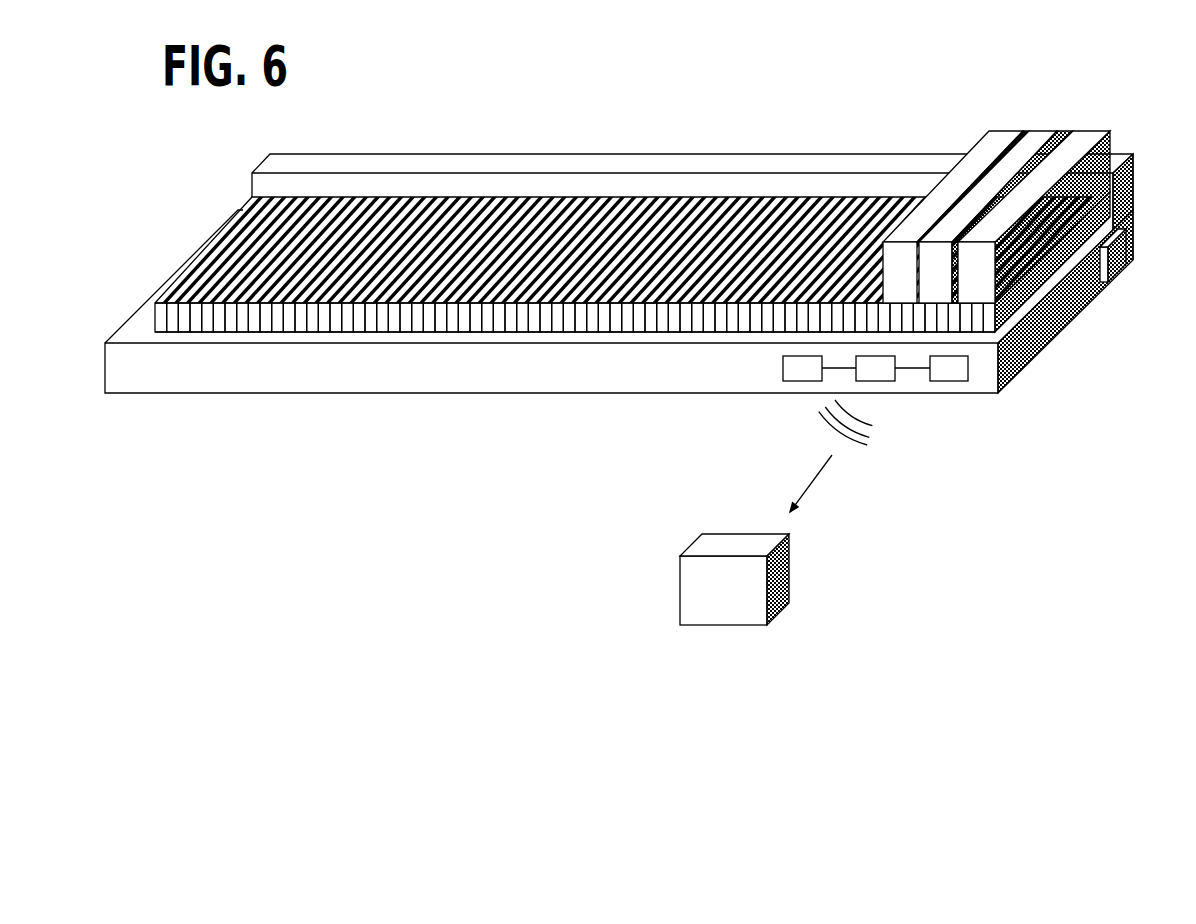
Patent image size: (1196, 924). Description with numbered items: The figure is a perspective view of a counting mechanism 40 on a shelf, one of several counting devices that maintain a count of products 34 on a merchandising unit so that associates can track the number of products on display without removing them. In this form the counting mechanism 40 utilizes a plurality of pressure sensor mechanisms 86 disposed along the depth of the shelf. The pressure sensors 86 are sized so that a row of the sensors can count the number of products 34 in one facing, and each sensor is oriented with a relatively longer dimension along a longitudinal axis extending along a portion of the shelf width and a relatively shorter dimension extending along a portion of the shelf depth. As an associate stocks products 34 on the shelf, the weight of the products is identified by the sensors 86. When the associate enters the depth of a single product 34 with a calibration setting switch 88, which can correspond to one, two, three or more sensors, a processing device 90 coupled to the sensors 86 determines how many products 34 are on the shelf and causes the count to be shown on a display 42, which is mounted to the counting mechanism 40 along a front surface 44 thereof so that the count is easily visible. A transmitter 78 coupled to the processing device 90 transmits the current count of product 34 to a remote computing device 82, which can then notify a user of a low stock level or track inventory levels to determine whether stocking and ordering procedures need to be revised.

The products 34 is at (1000, 140).
The counting mechanism 40 is at (639, 314).
The display 42 is at (1122, 265).
The front surface 44 is at (1032, 340).
The transmitter 78 is at (880, 381).
The remote computing device 82 is at (737, 625).
The pressure sensor mechanisms 86 is at (447, 232).
The calibration setting switch 88 is at (783, 369).
The processing device 90 is at (958, 381).